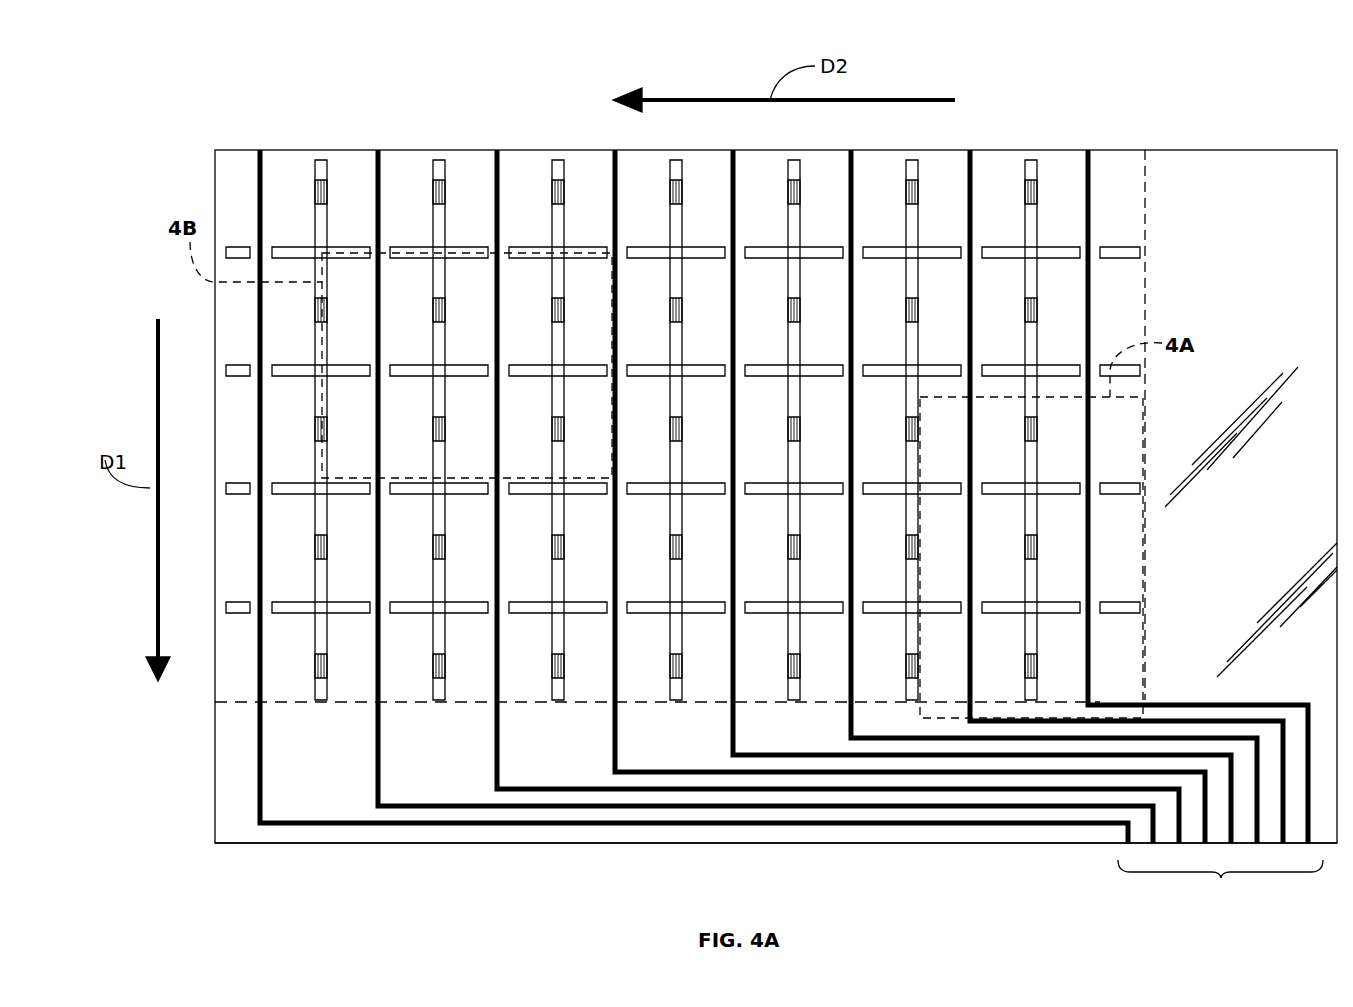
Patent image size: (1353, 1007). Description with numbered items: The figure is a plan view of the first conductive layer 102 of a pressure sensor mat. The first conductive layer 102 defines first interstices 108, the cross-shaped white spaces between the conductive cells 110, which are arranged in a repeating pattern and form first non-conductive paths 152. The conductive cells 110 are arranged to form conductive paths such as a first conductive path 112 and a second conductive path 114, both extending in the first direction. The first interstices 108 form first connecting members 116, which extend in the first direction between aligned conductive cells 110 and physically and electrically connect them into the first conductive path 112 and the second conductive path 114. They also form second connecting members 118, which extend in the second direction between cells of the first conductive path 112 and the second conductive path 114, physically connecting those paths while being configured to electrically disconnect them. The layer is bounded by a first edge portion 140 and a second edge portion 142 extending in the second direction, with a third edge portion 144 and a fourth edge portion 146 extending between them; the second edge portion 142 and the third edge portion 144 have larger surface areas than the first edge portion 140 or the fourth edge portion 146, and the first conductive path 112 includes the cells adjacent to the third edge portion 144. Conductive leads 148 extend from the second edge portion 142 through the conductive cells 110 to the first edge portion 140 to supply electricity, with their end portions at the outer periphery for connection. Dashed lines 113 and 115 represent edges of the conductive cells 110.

The first conductive layer 102 is at (222, 94).
The first interstices 108 is at (660, 253).
The conductive cells 110 is at (687, 385).
The first conductive path 112 is at (1110, 153).
The dashed line 113 is at (1145, 305).
The second conductive path 114 is at (953, 156).
The dashed line 115 is at (235, 703).
The first connecting members 116 is at (245, 250).
The second connecting members 118 is at (330, 192).
The first edge portion 140 is at (320, 156).
The second edge portion 142 is at (985, 843).
The third edge portion 144 is at (1220, 175).
The fourth edge portion 146 is at (218, 605).
The conductive leads 148 is at (1220, 884).
The first non-conductive paths 152 is at (1031, 152).